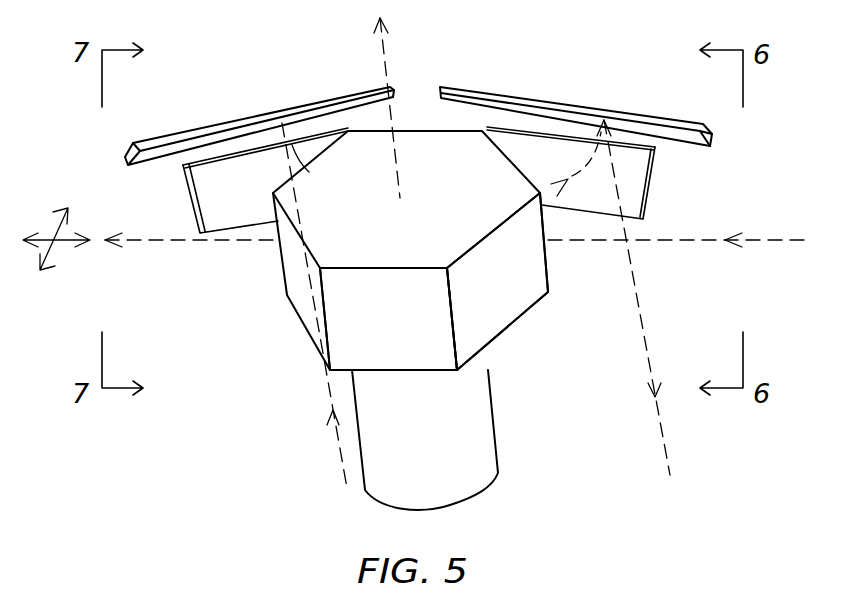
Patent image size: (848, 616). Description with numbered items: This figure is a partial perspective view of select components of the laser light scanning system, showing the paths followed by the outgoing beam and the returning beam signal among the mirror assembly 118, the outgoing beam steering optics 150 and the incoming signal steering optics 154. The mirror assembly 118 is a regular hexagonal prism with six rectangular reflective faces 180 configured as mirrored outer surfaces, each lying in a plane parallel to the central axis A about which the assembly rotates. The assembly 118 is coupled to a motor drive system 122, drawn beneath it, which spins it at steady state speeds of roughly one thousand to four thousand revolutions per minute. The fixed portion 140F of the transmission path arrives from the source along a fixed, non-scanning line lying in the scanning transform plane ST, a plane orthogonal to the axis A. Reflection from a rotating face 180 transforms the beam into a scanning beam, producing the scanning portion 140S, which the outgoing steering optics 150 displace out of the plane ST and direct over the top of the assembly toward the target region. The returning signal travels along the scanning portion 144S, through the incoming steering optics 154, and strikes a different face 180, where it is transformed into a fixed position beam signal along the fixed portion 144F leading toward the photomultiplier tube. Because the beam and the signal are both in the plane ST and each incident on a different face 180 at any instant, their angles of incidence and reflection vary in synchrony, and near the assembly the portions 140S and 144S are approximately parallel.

The mirror assembly 118 is at (505, 333).
The motor drive system 122 is at (492, 407).
The reflective faces 180 is at (407, 331).
The incoming signal steering optics 154 is at (263, 113).
The outgoing beam steering optics 150 is at (572, 100).
The fixed portion of detector signal path 144F is at (180, 241).
The scanning portion of detector signal path 144S is at (341, 456).
The fixed portion of transmission path 140F is at (683, 240).
The scanning portion of transmission path 140S is at (645, 337).
The central axis A is at (385, 53).
The scanning transform plane ST is at (60, 245).